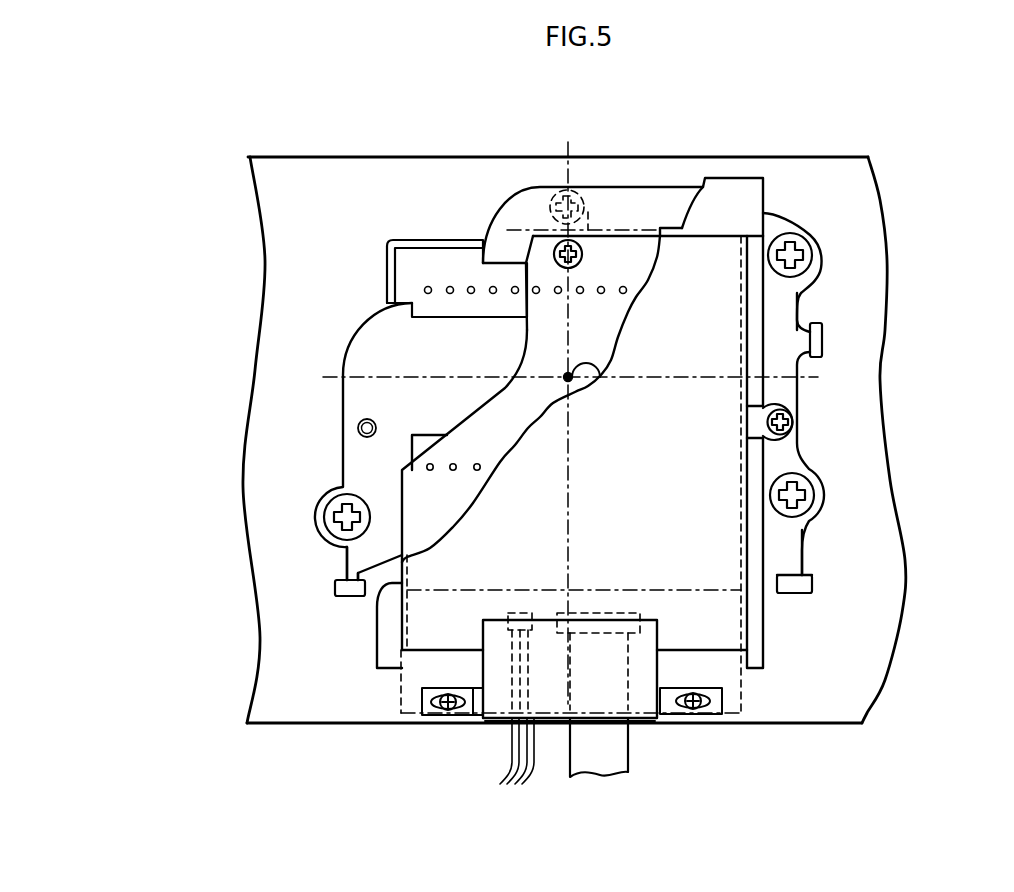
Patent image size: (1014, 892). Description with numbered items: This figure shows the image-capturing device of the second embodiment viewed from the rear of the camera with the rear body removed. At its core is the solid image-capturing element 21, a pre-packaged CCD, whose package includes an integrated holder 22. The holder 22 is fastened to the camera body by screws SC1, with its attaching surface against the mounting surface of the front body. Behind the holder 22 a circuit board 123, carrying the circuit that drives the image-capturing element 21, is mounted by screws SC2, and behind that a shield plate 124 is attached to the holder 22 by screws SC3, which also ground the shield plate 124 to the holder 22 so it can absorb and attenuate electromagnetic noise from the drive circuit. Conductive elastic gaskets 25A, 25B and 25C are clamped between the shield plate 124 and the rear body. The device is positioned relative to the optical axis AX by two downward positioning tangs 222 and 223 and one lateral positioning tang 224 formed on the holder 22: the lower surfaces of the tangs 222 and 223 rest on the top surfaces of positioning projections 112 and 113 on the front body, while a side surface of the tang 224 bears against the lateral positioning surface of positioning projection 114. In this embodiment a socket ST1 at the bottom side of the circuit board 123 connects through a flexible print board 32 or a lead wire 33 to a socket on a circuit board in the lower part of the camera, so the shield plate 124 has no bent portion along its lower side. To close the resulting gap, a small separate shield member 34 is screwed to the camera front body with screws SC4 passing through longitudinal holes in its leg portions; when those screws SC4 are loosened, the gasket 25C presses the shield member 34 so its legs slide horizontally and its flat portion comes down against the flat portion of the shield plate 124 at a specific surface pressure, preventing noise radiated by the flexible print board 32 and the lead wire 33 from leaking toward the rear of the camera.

The image-capturing element 21 is at (410, 270).
The holder 22 is at (520, 210).
The circuit board 123 is at (503, 407).
The optical axis AX is at (600, 375).
The screws SC1 is at (333, 515).
The screws SC2 is at (576, 248).
The screws SC3 is at (578, 205).
The screws SC4 is at (445, 708).
The gasket 25A is at (745, 205).
The gasket 25B is at (757, 652).
The gasket 25C is at (745, 700).
The positioning tang 224 is at (803, 310).
The positioning projection 114 is at (822, 340).
The positioning tang 223 is at (800, 558).
The shield plate 124 is at (812, 582).
The positioning projection 113 is at (800, 592).
The positioning tang 222 is at (347, 565).
The positioning projection 112 is at (340, 594).
The socket ST1 is at (787, 574).
The flexible print board 32 is at (627, 737).
The lead wire 33 is at (564, 718).
The shield member 34 is at (490, 721).